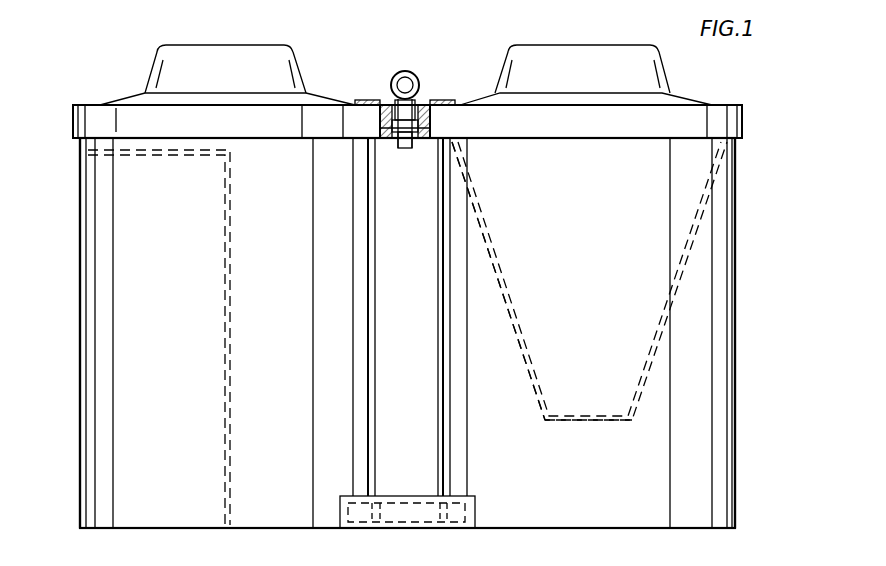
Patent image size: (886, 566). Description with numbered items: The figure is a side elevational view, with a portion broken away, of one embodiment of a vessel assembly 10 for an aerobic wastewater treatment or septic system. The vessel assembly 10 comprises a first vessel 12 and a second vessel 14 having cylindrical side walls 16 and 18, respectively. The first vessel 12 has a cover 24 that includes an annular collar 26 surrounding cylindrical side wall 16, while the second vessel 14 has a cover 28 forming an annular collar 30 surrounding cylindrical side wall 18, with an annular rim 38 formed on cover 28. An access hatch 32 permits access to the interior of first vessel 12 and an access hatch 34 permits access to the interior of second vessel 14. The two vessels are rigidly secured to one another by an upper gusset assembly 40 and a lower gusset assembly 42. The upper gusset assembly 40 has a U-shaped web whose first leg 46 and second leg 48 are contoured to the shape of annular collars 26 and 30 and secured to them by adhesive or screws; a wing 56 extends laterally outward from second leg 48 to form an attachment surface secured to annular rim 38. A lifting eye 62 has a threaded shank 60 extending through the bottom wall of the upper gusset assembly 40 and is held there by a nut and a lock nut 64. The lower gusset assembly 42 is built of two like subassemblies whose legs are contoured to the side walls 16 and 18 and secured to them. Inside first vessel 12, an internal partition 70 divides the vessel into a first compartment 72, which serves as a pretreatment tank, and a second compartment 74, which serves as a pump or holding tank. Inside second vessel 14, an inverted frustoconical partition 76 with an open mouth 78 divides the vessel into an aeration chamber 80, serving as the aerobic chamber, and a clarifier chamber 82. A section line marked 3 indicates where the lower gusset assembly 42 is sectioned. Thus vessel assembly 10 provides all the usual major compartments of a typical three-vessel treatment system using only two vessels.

The section line 3- 3 is at (60, 371).
The vessel assembly 10 is at (752, 194).
The first vessel 12 is at (70, 492).
The second vessel 14 is at (747, 473).
The cylindrical side wall 16 is at (360, 290).
The cylindrical side wall 18 is at (718, 316).
The cover 24 is at (134, 92).
The annular collar 26 is at (73, 124).
The cover 28 is at (685, 96).
The annular collar 30 is at (737, 120).
The access hatch 32 is at (274, 47).
The access hatch 34 is at (610, 45).
The annular rim 38 is at (108, 4).
The upper gusset assembly 40 is at (428, 62).
The lower gusset assembly 42 is at (385, 532).
The first leg 46 is at (388, 100).
The second leg 48 is at (420, 100).
The second wing 56 is at (456, 100).
The threaded shank 60 is at (405, 150).
The lifting eye 62 is at (405, 70).
The lock nut 64 is at (385, 126).
The internal partition 70 is at (225, 259).
The first compartment 72 is at (130, 310).
The second compartment 74 is at (325, 366).
The inverted frustoconical partition 76 is at (536, 402).
The open mouth 78 is at (596, 424).
The aeration chamber 80 is at (480, 376).
The clarifier chamber 82 is at (655, 246).